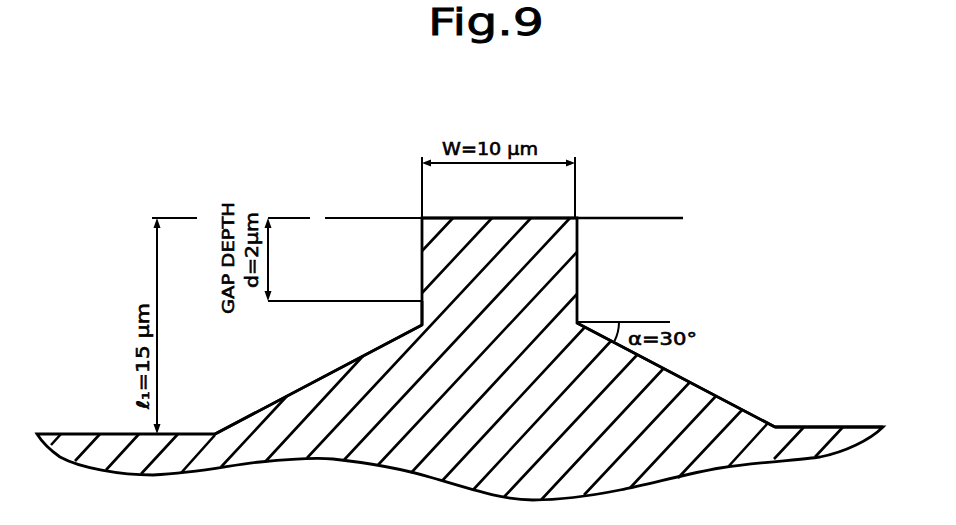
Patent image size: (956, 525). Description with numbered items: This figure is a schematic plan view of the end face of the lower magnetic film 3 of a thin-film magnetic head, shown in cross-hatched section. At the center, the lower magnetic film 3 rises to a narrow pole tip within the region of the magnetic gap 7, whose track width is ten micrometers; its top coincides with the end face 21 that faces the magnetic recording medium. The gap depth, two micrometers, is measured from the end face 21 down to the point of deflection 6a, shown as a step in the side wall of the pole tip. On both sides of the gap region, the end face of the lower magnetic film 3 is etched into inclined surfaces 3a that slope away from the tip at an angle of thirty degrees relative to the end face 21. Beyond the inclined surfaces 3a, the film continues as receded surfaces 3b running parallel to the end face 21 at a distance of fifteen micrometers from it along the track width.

The lower magnetic film 3 is at (577, 288).
The inclined surface 3a is at (270, 403).
The receded surface 3b is at (818, 427).
The point of deflection 6a is at (420, 312).
The magnetic gap 7 is at (512, 217).
The end face facing the magnetic recording medium 21 is at (665, 217).